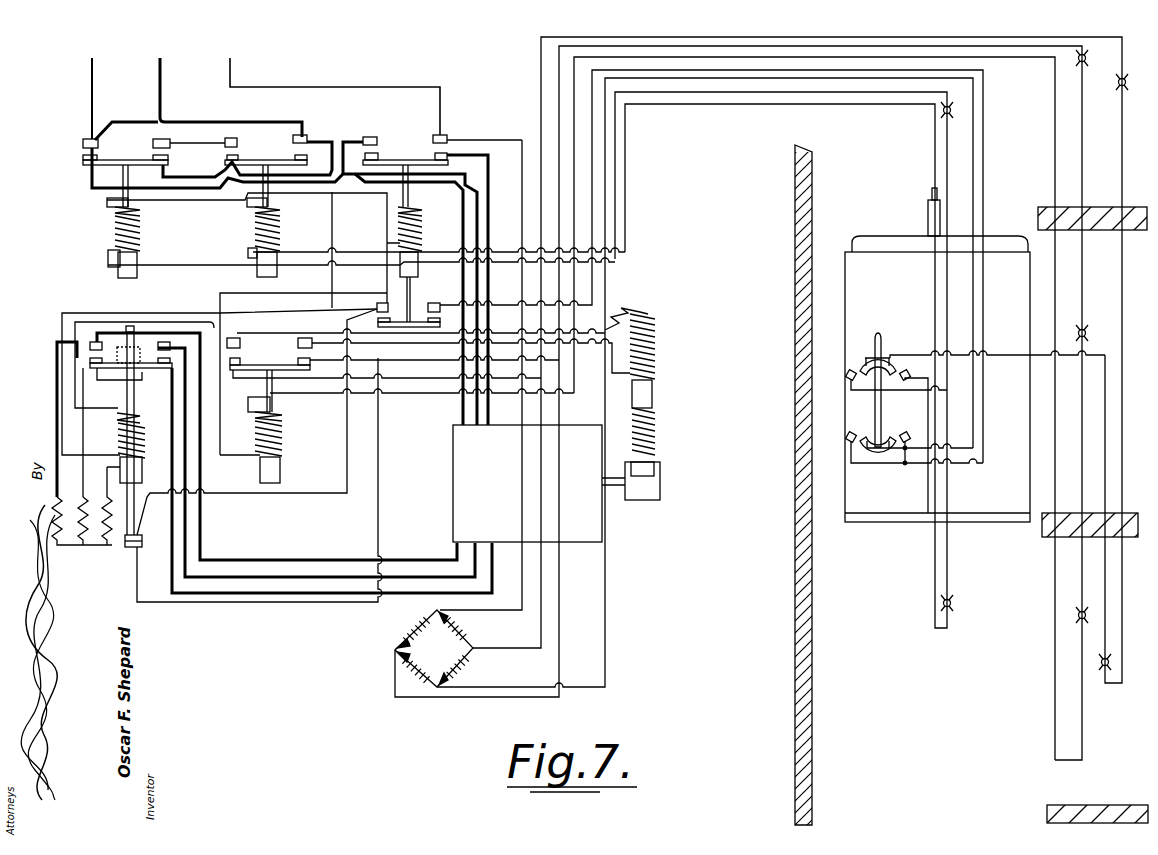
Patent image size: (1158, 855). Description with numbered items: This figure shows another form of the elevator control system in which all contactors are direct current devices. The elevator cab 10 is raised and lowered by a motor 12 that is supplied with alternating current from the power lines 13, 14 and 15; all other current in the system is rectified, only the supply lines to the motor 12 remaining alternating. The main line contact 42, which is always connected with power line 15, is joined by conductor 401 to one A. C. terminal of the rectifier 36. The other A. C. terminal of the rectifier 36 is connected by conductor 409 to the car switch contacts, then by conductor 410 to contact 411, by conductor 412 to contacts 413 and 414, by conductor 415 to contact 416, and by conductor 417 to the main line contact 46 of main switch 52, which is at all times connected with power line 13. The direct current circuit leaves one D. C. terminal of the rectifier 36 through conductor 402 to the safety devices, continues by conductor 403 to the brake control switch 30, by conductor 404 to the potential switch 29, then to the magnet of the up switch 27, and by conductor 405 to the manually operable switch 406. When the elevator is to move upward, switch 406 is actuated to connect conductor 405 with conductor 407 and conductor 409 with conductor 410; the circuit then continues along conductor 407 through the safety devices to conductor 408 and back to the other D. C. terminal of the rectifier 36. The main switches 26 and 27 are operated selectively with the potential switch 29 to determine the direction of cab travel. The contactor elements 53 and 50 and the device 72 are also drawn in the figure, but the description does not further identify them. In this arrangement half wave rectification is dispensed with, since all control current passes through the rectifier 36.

The power line 13 is at (90, 77).
The power line 14 is at (160, 73).
The power line 15 is at (230, 70).
The main line contact 46 is at (306, 137).
The main line contact 42 is at (441, 136).
The contactor bar 53 is at (125, 163).
The main switch 52 is at (264, 163).
The contactor bar 50 is at (405, 163).
The main switch 26 is at (115, 232).
The up switch 27 is at (255, 232).
The potential switch 29 is at (398, 233).
The brake control switch 30 is at (283, 433).
The conductor 417 is at (333, 232).
The conductor 405 is at (302, 249).
The conductor 401 is at (522, 180).
The conductor 408 is at (541, 55).
The conductor 402 is at (559, 88).
The conductor 403 is at (574, 107).
The conductor 404 is at (218, 296).
The contact 416 is at (377, 309).
The contact 411 is at (434, 304).
The conductor 409 is at (604, 296).
The conductor 410 is at (594, 297).
The solenoid plunger 72 is at (656, 350).
The motor 12 is at (603, 541).
The conductor 412 is at (379, 482).
The conductor 415 is at (242, 497).
The contact 414 is at (126, 541).
The contact 413 is at (130, 553).
The rectifier 36 is at (415, 630).
The elevator cab 10 is at (870, 512).
The manually operable switch 406 is at (866, 388).
The conductor 407 is at (902, 358).